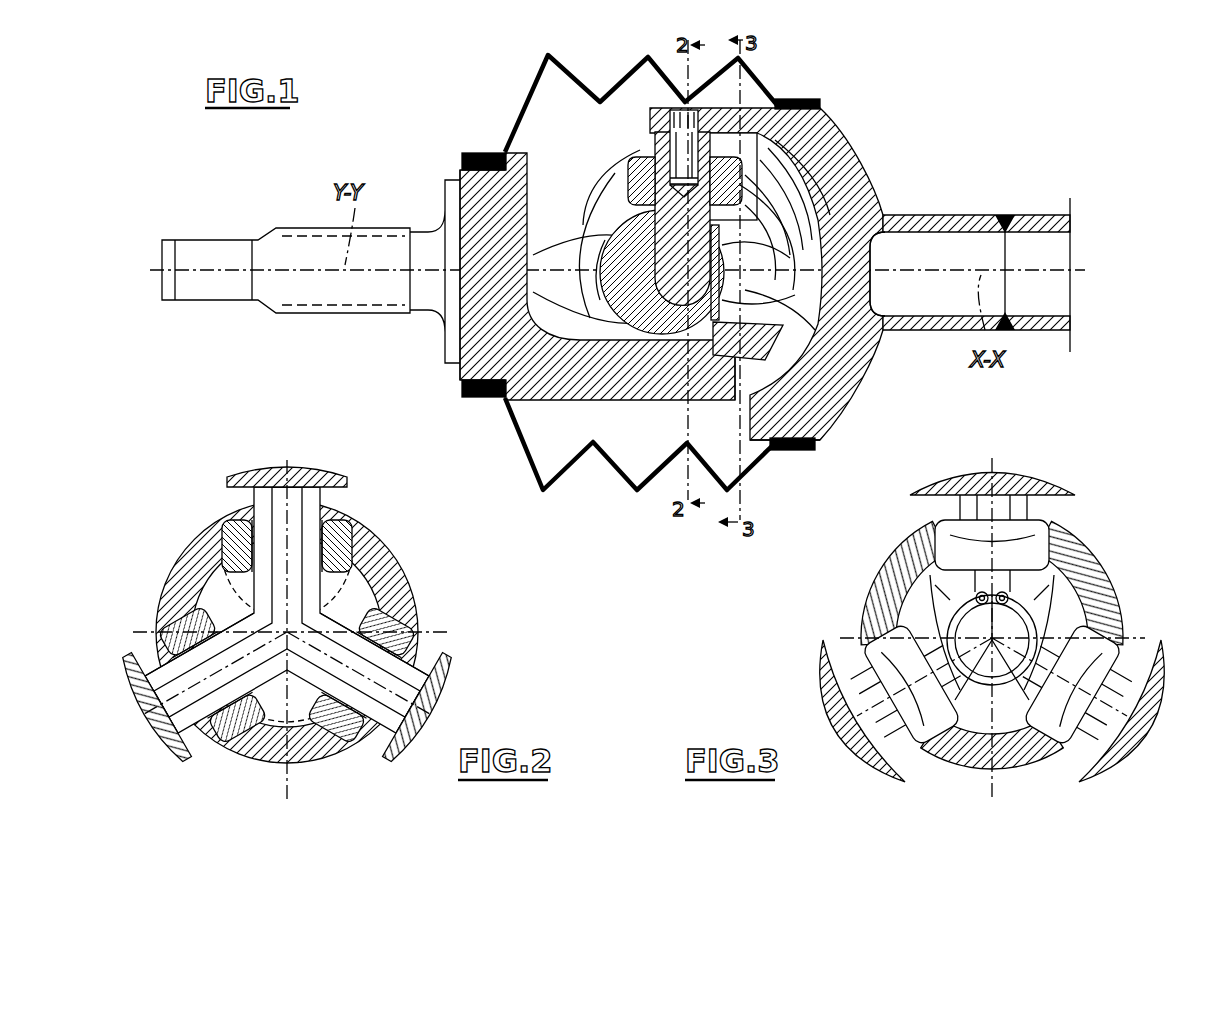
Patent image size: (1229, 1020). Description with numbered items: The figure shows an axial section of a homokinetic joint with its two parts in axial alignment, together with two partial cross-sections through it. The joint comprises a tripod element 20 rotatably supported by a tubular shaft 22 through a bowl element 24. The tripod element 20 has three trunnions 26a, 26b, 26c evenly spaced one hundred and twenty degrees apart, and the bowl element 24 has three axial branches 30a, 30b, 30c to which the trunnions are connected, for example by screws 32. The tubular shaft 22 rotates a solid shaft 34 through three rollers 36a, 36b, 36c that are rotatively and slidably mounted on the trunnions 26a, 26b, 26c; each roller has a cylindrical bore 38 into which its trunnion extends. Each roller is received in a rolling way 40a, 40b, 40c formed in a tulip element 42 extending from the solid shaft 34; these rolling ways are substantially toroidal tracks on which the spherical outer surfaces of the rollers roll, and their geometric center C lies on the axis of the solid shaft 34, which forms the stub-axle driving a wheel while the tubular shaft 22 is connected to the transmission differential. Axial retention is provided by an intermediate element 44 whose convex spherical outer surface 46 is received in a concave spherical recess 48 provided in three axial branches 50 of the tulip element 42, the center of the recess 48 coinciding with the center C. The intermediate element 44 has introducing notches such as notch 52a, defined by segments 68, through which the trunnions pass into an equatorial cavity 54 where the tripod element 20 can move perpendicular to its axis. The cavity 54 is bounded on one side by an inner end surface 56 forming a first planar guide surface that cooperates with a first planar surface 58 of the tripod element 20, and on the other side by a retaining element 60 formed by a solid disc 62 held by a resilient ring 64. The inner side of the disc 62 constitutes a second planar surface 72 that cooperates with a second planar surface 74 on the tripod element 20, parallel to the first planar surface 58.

In FIG. 1, the tripod element 20 is at (660, 350).
In FIG. 1, the tubular shaft 22 is at (925, 328).
In FIG. 1, the bowl element 24 is at (820, 153).
In FIG. 1, the trunnion 26a is at (656, 140).
In FIG. 2, the trunnion 26a is at (310, 503).
In FIG. 3, the trunnion 26a is at (1020, 505).
In FIG. 2, the trunnion 26b is at (407, 673).
In FIG. 3, the trunnion 26b is at (1117, 677).
In FIG. 2, the trunnion 26c is at (197, 753).
In FIG. 3, the trunnion 26c is at (848, 722).
In FIG. 1, the axial branch 30a is at (760, 88).
In FIG. 2, the axial branch 30a is at (312, 478).
In FIG. 2, the axial branch 30b is at (440, 680).
In FIG. 2, the axial branch 30c is at (150, 690).
In FIG. 1, the screw 32 is at (670, 110).
In FIG. 1, the solid shaft 34 is at (305, 248).
In FIG. 1, the roller 36a is at (628, 160).
In FIG. 2, the roller 36a is at (335, 512).
In FIG. 3, the roller 36a is at (1063, 530).
In FIG. 2, the roller 36b is at (415, 607).
In FIG. 3, the roller 36b is at (1100, 620).
In FIG. 2, the roller 36c is at (215, 737).
In FIG. 3, the roller 36c is at (927, 727).
In FIG. 1, the cylindrical bore 38 is at (812, 140).
In FIG. 1, the rolling way 40a is at (847, 187).
In FIG. 2, the rolling way 40a is at (247, 520).
In FIG. 1, the rolling way 40b is at (796, 285).
In FIG. 2, the rolling way 40b is at (360, 727).
In FIG. 2, the rolling way 40c is at (183, 627).
In FIG. 1, the tulip element 42 is at (462, 380).
In FIG. 1, the intermediate element 44 is at (593, 337).
In FIG. 3, the intermediate element 44 is at (934, 625).
In FIG. 1, the convex spherical outer surface 46 is at (567, 337).
In FIG. 1, the concave spherical recess 48 is at (755, 458).
In FIG. 2, the concave spherical recess 48 is at (382, 563).
In FIG. 1, the axial branch 50 is at (750, 357).
In FIG. 2, the axial branch 50 is at (372, 540).
In FIG. 3, the axial branch 50 is at (1090, 557).
In FIG. 1, the introducing notch 52a is at (850, 207).
In FIG. 1, the equatorial cavity 54 is at (693, 353).
In FIG. 1, the inner end surface 56 is at (625, 207).
In FIG. 1, the first planar surface 58 is at (647, 282).
In FIG. 1, the retaining element 60 is at (720, 295).
In FIG. 1, the solid disc 62 is at (872, 250).
In FIG. 3, the resilient ring 64 is at (992, 638).
In FIG. 3, the segment 68 is at (1080, 607).
In FIG. 1, the second planar surface 72 is at (808, 390).
In FIG. 1, the second planar surface 74 is at (847, 167).
In FIG. 1, the geometric center C is at (668, 236).